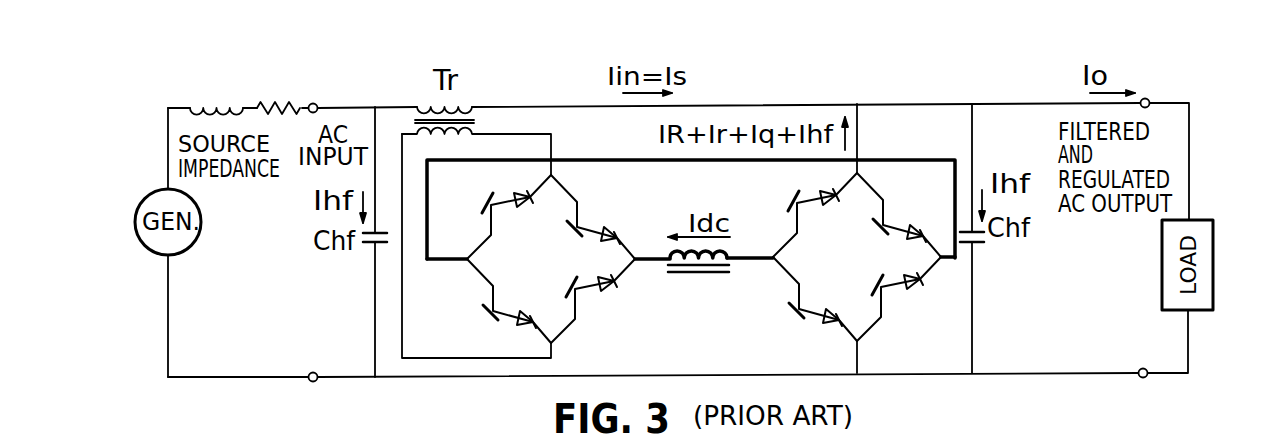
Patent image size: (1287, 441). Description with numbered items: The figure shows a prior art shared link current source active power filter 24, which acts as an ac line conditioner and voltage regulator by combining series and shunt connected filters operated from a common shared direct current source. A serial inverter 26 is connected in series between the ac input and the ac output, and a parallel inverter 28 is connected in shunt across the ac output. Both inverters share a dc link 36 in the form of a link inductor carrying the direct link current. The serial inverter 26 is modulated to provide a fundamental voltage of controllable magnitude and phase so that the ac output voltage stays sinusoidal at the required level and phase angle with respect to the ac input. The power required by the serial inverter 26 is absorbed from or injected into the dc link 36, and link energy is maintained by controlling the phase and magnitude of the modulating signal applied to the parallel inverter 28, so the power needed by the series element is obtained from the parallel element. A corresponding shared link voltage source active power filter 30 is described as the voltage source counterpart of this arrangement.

The shared link current source active power filter 24 is at (190, 63).
The serial inverter 26 is at (545, 268).
The parallel inverter 28 is at (845, 272).
The dc link 36 is at (698, 236).
The shared link voltage source active power filter 30 is at (117, 434).